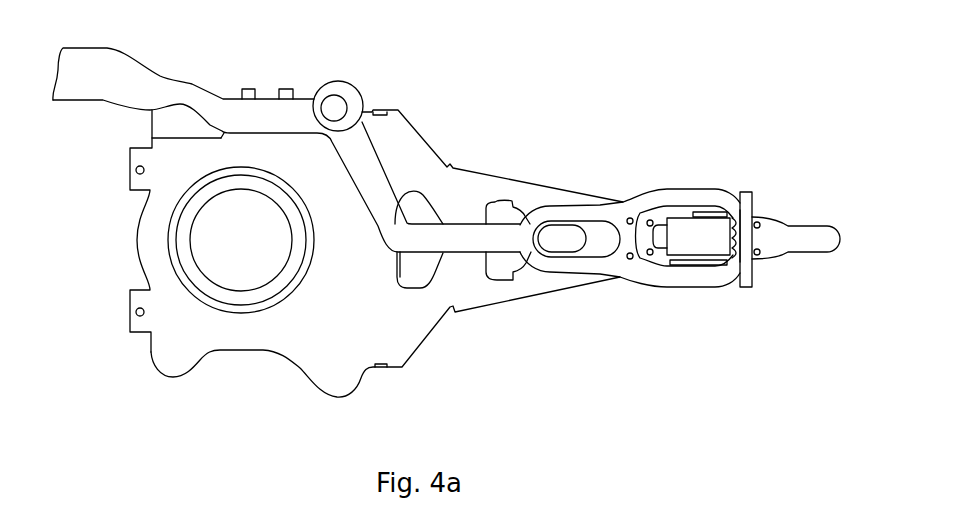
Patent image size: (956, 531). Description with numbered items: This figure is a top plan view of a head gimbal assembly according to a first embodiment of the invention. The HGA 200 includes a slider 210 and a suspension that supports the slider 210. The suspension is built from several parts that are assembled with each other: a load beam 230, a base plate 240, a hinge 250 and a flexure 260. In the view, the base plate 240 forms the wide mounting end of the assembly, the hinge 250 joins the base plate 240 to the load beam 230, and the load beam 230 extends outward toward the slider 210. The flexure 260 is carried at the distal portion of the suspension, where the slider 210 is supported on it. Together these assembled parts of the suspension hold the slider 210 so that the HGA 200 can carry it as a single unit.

The head gimbal assembly 200 is at (84, 33).
The slider 210 is at (700, 243).
The load beam 230 is at (477, 192).
The base plate 240 is at (202, 280).
The hinge 250 is at (282, 322).
The flexure 260 is at (625, 243).